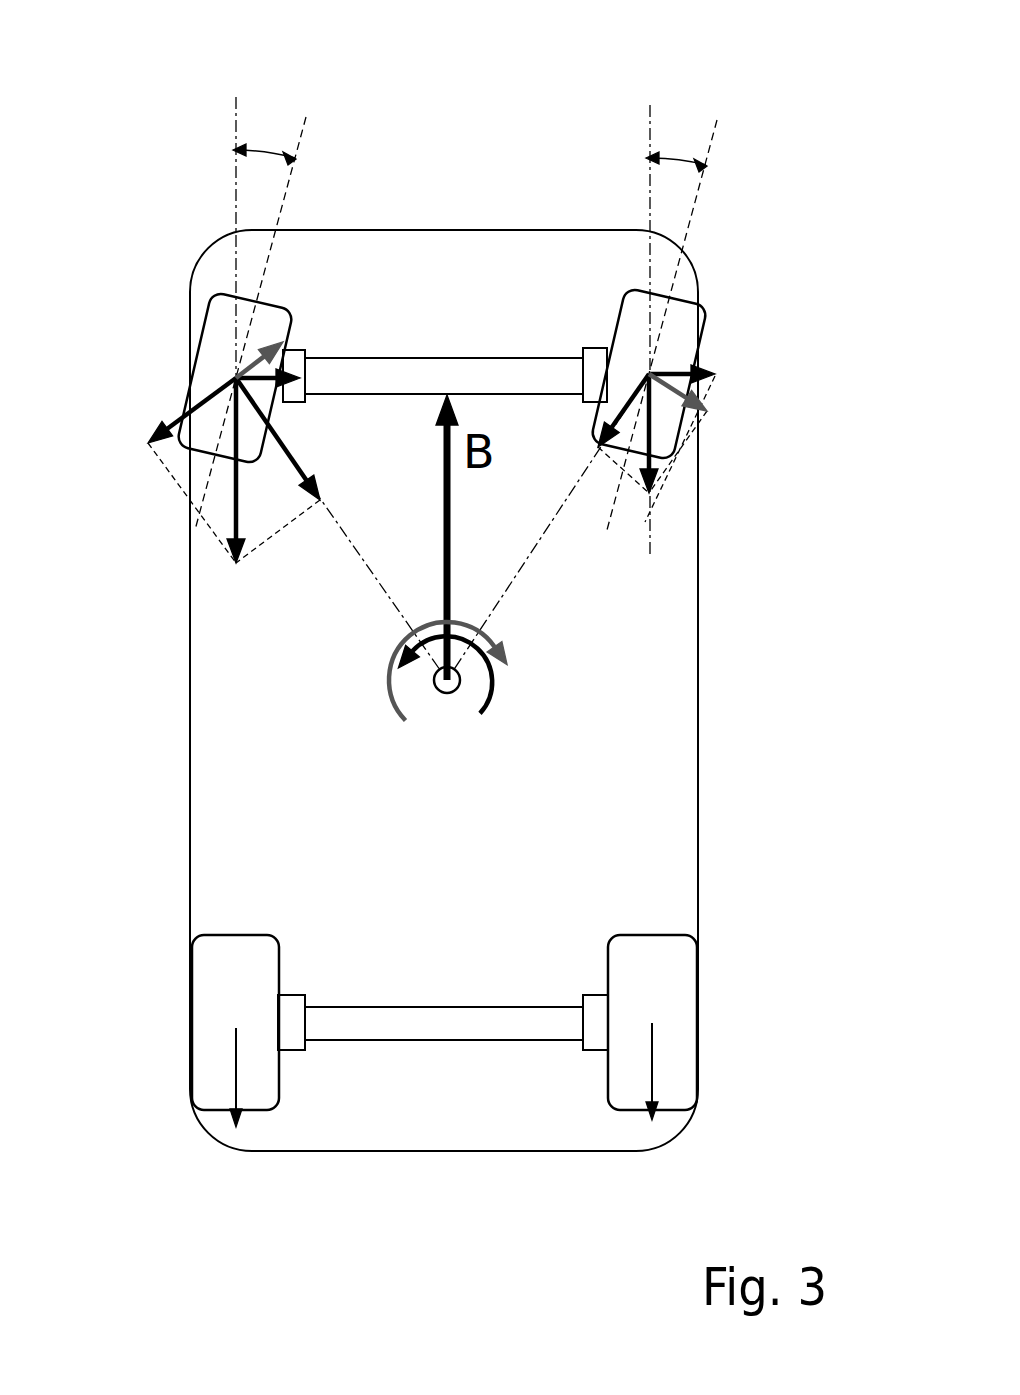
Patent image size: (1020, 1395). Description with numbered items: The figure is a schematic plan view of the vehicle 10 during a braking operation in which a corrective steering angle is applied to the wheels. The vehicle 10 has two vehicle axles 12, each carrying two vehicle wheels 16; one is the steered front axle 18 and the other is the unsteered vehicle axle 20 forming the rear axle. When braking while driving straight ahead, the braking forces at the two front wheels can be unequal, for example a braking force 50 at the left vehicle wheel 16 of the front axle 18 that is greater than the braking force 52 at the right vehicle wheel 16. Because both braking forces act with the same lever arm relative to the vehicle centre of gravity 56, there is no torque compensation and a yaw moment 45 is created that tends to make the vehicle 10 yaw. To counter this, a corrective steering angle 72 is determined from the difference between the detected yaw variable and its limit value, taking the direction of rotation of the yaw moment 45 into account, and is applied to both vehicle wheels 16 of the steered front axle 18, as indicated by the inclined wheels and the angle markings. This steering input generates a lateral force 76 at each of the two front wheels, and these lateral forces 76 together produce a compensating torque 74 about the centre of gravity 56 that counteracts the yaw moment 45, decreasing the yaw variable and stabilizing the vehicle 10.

The vehicle 10 is at (179, 165).
The vehicle axle 12 is at (457, 699).
The vehicle wheel 16 is at (223, 323).
The steered front axle 18 is at (450, 373).
The unsteered vehicle axle 20 is at (473, 1025).
The yaw moment 45 is at (482, 716).
The braking force 50 is at (232, 532).
The braking force 52 is at (657, 468).
The vehicle centre of gravity 56 is at (434, 683).
The corrective steering angle 72 is at (267, 147).
The compensating torque 74 is at (505, 657).
The lateral force 76 is at (253, 360).